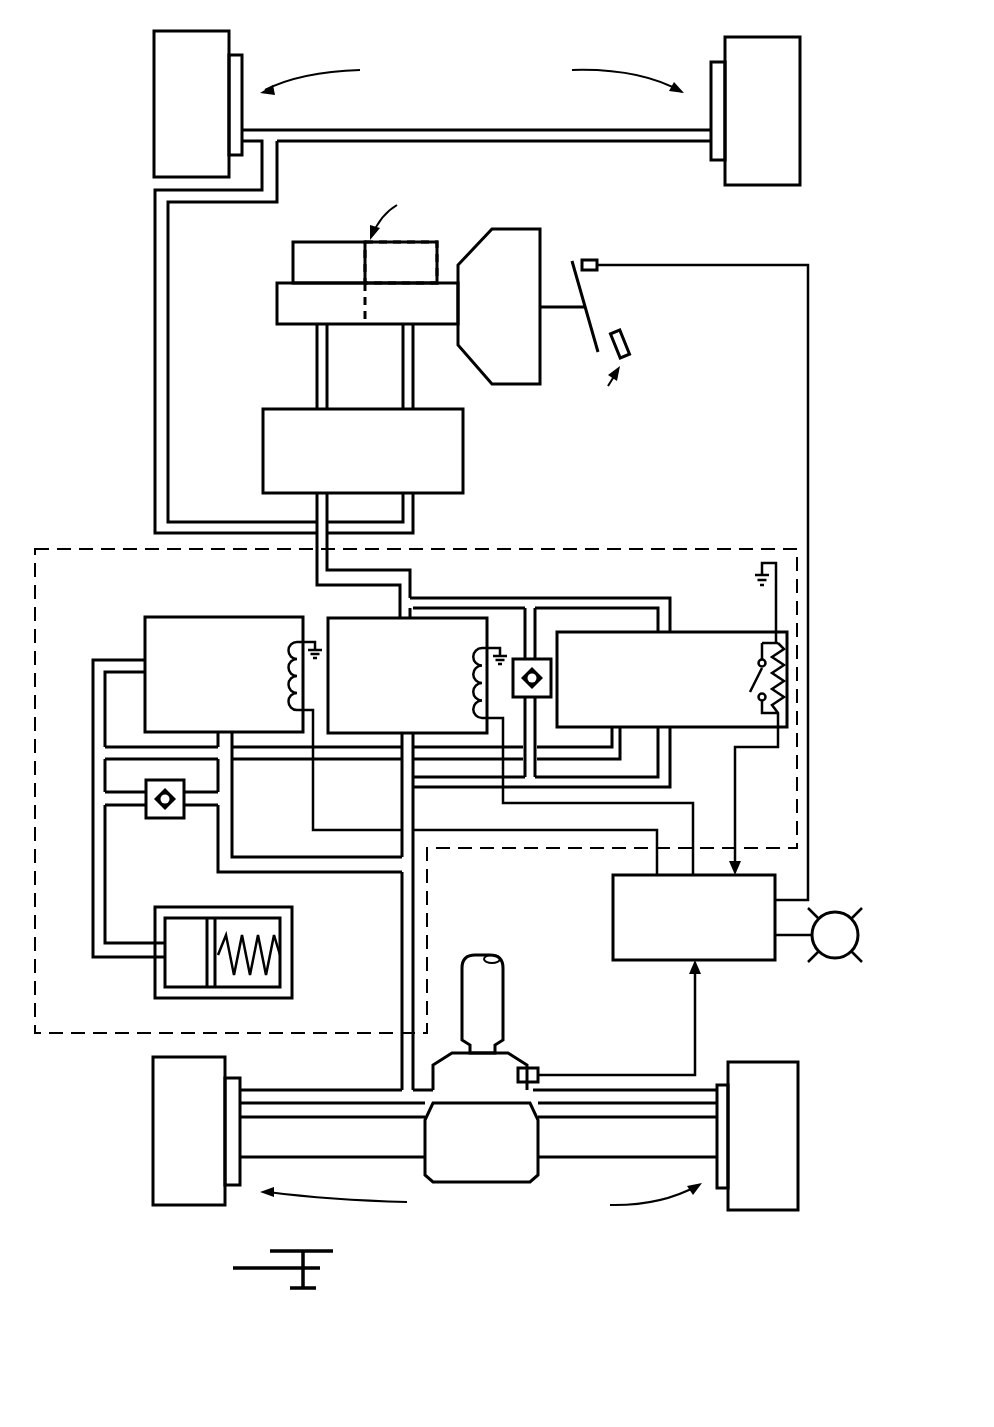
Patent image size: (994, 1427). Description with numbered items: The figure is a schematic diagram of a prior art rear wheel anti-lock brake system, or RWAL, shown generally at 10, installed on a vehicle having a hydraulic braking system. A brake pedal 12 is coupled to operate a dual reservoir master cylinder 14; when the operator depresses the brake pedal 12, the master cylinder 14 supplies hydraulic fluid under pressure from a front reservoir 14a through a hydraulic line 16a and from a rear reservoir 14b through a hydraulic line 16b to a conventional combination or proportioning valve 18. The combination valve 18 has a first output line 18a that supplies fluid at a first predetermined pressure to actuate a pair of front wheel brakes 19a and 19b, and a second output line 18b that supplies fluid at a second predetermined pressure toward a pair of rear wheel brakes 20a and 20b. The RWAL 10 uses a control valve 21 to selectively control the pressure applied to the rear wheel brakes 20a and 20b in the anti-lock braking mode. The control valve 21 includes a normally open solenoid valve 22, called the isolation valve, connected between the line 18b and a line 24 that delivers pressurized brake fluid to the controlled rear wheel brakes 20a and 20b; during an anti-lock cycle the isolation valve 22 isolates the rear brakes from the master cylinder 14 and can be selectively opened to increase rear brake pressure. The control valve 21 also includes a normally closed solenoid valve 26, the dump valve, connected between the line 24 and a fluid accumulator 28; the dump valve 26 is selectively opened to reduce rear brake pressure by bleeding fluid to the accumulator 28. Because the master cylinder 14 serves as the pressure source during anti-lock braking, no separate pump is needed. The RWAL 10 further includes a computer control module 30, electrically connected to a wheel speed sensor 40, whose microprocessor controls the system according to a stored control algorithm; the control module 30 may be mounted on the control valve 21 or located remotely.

The rear wheel anti-lock brake system (RWAL) 10 is at (128, 1066).
The brake pedal 12 is at (622, 330).
The dual reservoir master cylinder 14 is at (379, 294).
The front reservoir 14a is at (404, 240).
The rear reservoir 14b is at (293, 256).
The hydraulic line 16a is at (415, 393).
The hydraulic line 16b is at (317, 377).
The combination valve 18 is at (463, 448).
The first output line 18a is at (153, 403).
The second output line 18b is at (376, 572).
The front wheel brake 19a is at (240, 110).
The front wheel brake 19b is at (710, 105).
The rear wheel brake 20a is at (240, 1165).
The rear wheel brake 20b is at (717, 1186).
The control valve 21 is at (545, 535).
The isolation valve 22 is at (358, 618).
The line 24 is at (416, 895).
The dump valve 26 is at (188, 616).
The fluid accumulator 28 is at (235, 902).
The computer control module 30 is at (613, 913).
The wheel speed sensor 40 is at (538, 1070).